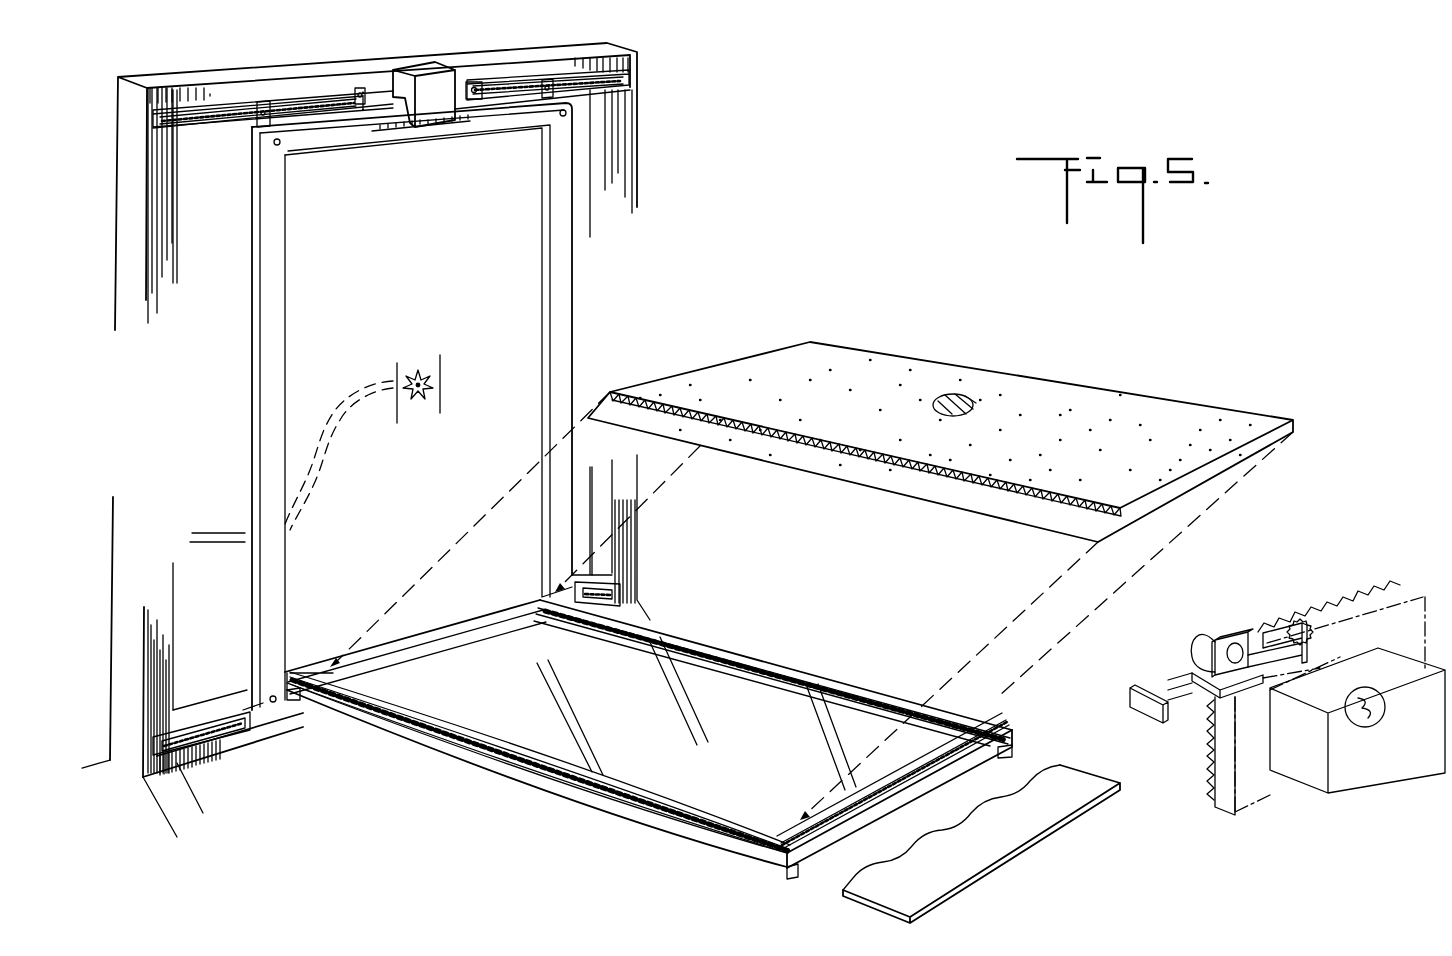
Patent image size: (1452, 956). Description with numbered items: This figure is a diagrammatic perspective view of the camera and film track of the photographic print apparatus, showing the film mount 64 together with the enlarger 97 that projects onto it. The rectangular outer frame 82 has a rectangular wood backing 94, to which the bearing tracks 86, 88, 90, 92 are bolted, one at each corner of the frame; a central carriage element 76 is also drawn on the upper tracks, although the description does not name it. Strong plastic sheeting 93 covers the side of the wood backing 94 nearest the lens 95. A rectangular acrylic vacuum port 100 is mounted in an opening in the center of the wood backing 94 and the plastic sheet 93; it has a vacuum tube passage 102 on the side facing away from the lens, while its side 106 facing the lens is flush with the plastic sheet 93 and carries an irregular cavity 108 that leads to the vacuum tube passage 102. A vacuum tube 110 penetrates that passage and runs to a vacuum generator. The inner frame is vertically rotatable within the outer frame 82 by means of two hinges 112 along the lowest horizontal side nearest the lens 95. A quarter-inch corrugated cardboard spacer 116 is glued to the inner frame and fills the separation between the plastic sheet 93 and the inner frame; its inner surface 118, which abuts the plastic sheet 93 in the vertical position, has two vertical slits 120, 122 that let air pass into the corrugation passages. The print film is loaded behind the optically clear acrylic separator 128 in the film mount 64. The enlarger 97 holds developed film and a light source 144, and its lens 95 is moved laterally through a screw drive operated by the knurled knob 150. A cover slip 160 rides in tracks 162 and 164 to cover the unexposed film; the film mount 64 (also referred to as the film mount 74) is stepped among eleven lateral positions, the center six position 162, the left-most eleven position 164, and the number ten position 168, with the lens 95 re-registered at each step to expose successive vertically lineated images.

The film mount 64 is at (680, 734).
The film mount 74 is at (203, 750).
The carriage block 76 is at (375, 162).
The rectangular outer frame 82 is at (417, 406).
The bearing track 86 is at (232, 107).
The bearing track 88 is at (507, 88).
The bearing track 90 is at (218, 720).
The bearing track 92 is at (602, 590).
The plastic sheeting 93 is at (527, 507).
The wood backing 94 is at (253, 253).
The lens 95 is at (1203, 630).
The enlarger 97 is at (1427, 597).
The acrylic vacuum port 100 is at (433, 367).
The vacuum tube passage 102 is at (420, 387).
The side of the acrylic vacuum port facing the lens 106 is at (425, 405).
The irregular cavity 108 is at (420, 367).
The vacuum tube 110 is at (217, 535).
The hinges 112 is at (290, 700).
The corrugated cardboard spacer 116 is at (863, 697).
The inner surface of the cardboard spacer 118 is at (998, 712).
The vertical slit 120 is at (613, 785).
The vertical slit 122 is at (765, 657).
The optically clear acrylic separator 128 is at (537, 737).
The light source 144 is at (1368, 727).
The knurled knob 150 is at (1312, 622).
The cover slip 160 is at (1030, 843).
The track / center "6" position 162 is at (437, 137).
The track / left-most "11" position 164 is at (375, 133).
The number 10 position 168 is at (403, 137).